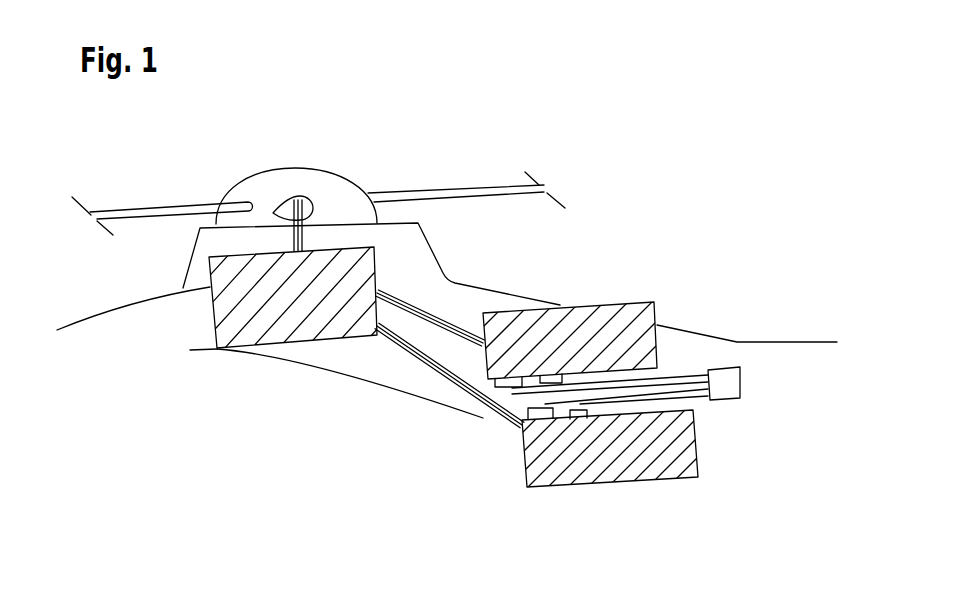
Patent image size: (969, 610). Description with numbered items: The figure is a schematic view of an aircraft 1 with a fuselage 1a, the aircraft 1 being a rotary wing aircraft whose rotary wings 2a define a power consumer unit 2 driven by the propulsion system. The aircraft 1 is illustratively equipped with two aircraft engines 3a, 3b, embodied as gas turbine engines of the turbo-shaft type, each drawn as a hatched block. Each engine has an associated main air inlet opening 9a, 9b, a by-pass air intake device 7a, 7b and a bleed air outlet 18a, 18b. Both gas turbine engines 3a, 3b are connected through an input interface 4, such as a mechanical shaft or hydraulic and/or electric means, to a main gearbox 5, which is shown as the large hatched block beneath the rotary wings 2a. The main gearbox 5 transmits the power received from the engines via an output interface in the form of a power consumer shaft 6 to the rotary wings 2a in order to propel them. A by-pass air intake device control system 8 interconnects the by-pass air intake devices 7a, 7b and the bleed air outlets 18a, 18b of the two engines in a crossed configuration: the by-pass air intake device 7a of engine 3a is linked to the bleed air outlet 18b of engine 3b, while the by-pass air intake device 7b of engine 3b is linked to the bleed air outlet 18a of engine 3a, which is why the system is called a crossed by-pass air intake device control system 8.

The aircraft 1 is at (141, 297).
The fuselage 1a is at (730, 353).
The power consumer unit 2 is at (497, 183).
The rotary wings 2a is at (162, 210).
The aircraft engine 3a is at (620, 310).
The aircraft engine 3b is at (690, 448).
The input interface 4 is at (400, 323).
The main gearbox 5 is at (363, 262).
The power consumer shaft 6 is at (290, 240).
The by-pass air intake device 7a is at (500, 388).
The by-pass air intake device 7b is at (533, 415).
The crossed by-pass air intake device control system 8 is at (737, 385).
The main air inlet opening 9a is at (563, 308).
The main air inlet opening 9b is at (606, 459).
The bleed air outlet 18a is at (552, 378).
The bleed air outlet 18b is at (582, 422).